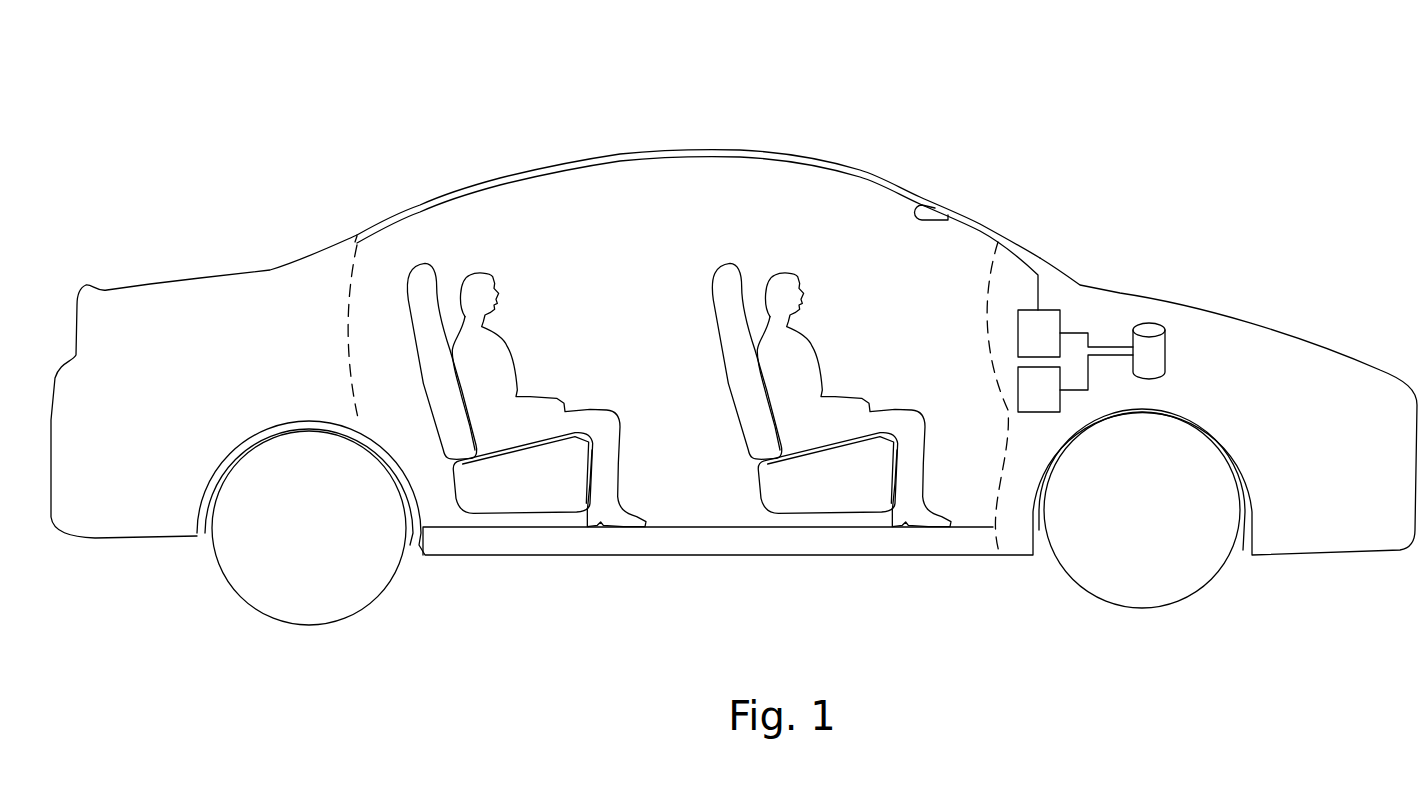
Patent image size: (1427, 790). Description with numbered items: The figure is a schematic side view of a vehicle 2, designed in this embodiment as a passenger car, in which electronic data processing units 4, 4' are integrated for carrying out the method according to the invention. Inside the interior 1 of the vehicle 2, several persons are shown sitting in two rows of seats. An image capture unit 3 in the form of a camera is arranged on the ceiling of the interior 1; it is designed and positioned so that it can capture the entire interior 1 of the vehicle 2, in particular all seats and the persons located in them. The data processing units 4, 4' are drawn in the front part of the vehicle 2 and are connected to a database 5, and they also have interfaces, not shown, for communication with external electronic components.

The interior 1 is at (734, 328).
The vehicle 2 is at (697, 134).
The image capture unit 3 is at (938, 211).
The electronic data processing unit 4 is at (1075, 333).
The electronic data processing unit 4' is at (1075, 383).
The database 5 is at (1158, 365).